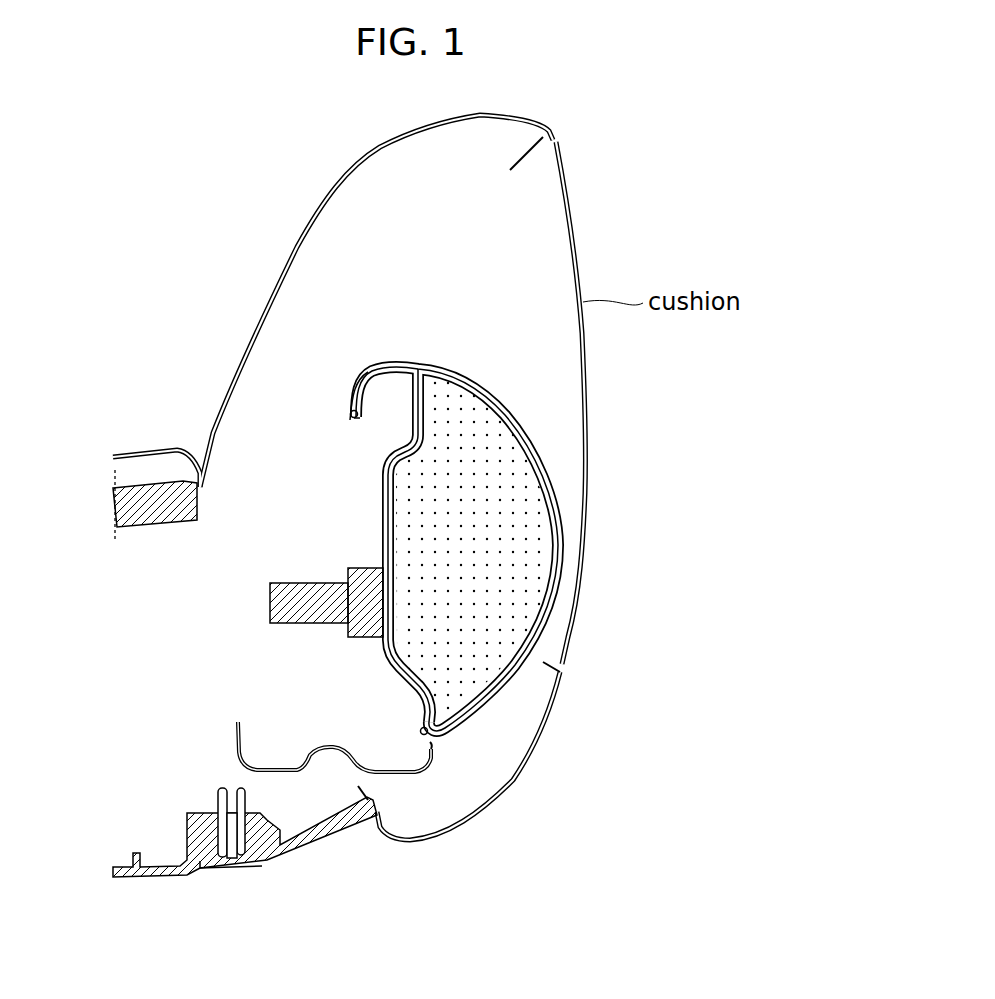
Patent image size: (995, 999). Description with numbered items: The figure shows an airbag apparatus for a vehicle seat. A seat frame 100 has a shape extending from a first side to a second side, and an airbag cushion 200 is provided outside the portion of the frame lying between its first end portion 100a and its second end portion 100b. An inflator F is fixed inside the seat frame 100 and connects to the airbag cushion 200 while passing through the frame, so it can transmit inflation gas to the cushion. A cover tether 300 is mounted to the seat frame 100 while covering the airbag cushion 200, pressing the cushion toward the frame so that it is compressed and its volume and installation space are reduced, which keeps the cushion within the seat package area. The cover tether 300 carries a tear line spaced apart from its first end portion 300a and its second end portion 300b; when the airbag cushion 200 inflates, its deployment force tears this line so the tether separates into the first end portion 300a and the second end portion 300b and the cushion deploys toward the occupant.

The seat frame 100 is at (405, 672).
The first end portion of the seat frame 100a is at (388, 400).
The second end portion of the seat frame 100b is at (432, 765).
The airbag cushion 200 is at (530, 508).
The cover tether 300 is at (557, 563).
The first end portion of the cover tether 300a is at (386, 360).
The second end portion of the cover tether 300b is at (447, 730).
The inflator F is at (270, 603).